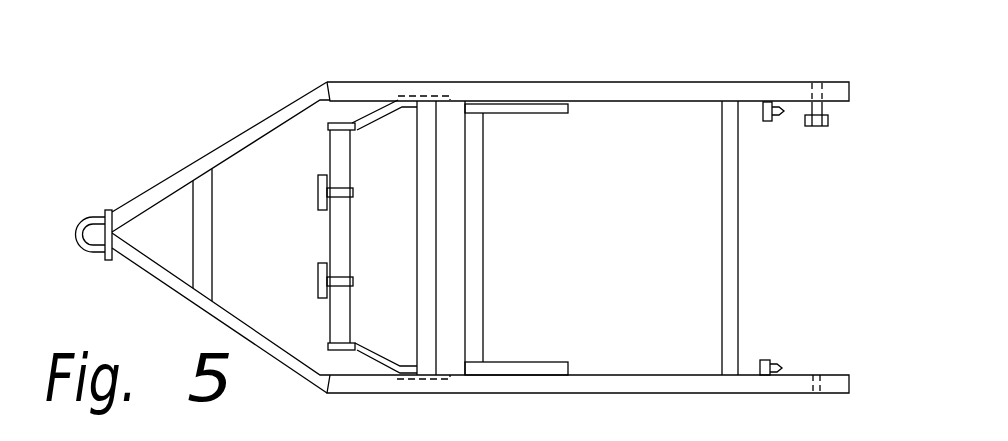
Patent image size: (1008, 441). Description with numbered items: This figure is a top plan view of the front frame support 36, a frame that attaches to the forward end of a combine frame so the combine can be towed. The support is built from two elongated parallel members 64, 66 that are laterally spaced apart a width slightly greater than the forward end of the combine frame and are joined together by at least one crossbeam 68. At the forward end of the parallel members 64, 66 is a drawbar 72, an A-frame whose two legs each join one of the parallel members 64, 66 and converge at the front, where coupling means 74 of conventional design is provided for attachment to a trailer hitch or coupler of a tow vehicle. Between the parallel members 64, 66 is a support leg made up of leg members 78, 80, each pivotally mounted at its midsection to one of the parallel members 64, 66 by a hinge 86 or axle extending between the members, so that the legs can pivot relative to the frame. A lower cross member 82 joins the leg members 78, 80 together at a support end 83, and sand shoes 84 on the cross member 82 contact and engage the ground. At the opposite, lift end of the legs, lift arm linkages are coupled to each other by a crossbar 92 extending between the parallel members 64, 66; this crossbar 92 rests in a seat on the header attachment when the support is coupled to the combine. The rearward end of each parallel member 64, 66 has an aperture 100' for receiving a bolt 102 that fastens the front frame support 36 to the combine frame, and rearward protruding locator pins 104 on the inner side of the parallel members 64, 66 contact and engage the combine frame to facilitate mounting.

The front frame support 36 is at (603, 58).
The parallel member 64 is at (675, 90).
The parallel member 66 is at (640, 378).
The crossbeam 68 is at (735, 252).
The drawbar 72 is at (213, 152).
The coupling means 74 is at (92, 217).
The leg member 78 is at (370, 126).
The leg member 80 is at (365, 346).
The lower cross member 82 is at (330, 243).
The support end 83 is at (350, 123).
The sand shoes 84 is at (318, 193).
The hinge 86 is at (423, 378).
The crossbar 92 is at (480, 233).
The hidden rear bolt 100' is at (790, 403).
The bolt 102 is at (808, 127).
The locator pins 104 is at (777, 106).